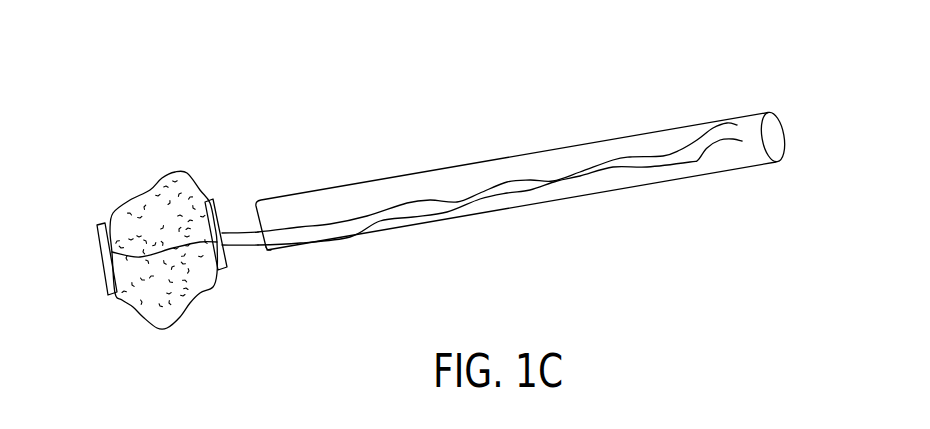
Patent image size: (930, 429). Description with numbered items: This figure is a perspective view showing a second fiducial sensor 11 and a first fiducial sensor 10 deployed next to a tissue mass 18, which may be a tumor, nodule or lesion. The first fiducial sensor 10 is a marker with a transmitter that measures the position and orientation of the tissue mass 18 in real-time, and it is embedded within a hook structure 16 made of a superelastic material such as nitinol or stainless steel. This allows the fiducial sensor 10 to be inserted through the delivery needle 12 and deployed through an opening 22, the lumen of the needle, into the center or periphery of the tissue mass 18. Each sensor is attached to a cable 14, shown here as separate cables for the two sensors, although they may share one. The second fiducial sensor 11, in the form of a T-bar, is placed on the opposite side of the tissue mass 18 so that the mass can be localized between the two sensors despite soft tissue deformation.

The fiducial sensor 10 is at (220, 272).
The second fiducial sensor 11 is at (110, 297).
The delivery needle 12 is at (610, 137).
The cable 14 is at (630, 158).
The hook structure 16 is at (218, 208).
The tissue mass 18 is at (142, 195).
The opening 22 is at (263, 252).